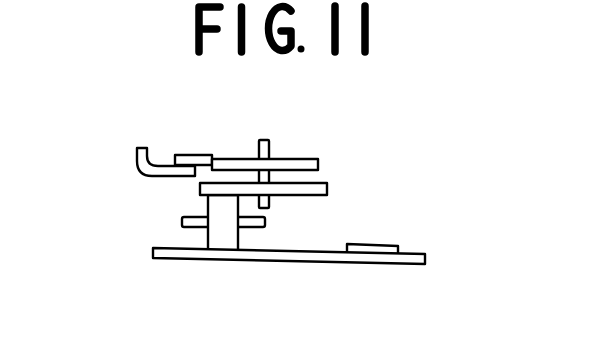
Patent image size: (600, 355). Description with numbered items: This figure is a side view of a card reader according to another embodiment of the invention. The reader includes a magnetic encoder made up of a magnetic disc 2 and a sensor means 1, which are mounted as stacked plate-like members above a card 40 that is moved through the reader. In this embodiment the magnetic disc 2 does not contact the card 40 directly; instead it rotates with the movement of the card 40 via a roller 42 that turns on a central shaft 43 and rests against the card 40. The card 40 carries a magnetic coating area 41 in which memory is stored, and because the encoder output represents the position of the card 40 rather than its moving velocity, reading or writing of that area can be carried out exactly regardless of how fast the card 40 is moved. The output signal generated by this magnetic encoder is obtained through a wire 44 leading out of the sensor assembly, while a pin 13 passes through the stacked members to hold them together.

The sensor means 1 is at (318, 150).
The magnetic disc 2 is at (328, 191).
The pin 13 is at (272, 149).
The card 40 is at (410, 253).
The magnetic coating area 41 is at (377, 243).
The roller 42 is at (227, 230).
The central shaft 43 is at (266, 222).
The wire 44 is at (141, 172).